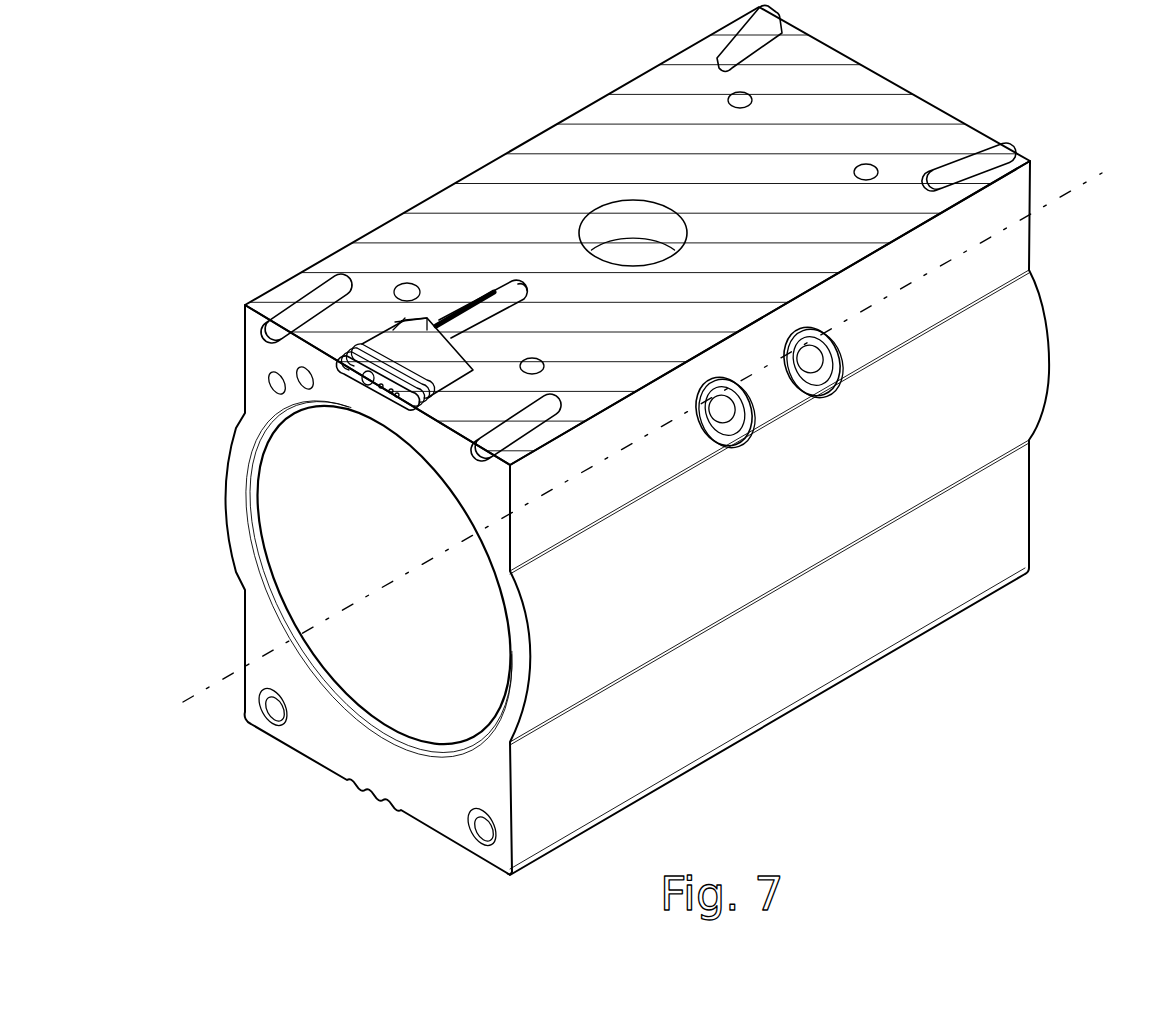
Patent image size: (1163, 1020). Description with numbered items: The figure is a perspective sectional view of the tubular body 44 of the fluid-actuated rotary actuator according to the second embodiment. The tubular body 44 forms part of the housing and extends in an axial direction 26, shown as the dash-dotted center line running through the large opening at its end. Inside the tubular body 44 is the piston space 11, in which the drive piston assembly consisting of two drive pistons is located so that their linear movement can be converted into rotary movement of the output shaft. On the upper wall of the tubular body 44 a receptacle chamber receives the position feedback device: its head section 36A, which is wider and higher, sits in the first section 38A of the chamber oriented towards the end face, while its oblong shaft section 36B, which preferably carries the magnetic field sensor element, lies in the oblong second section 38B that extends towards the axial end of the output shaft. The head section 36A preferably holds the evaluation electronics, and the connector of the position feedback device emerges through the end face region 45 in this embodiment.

The piston space 11 is at (345, 560).
The axial direction 26 is at (642, 424).
The head section 36A is at (402, 348).
The shaft section 36B is at (475, 313).
The first section 38A is at (427, 342).
The second section 38B is at (505, 300).
The tubular body 44 is at (990, 542).
The end flange 45 is at (320, 363).